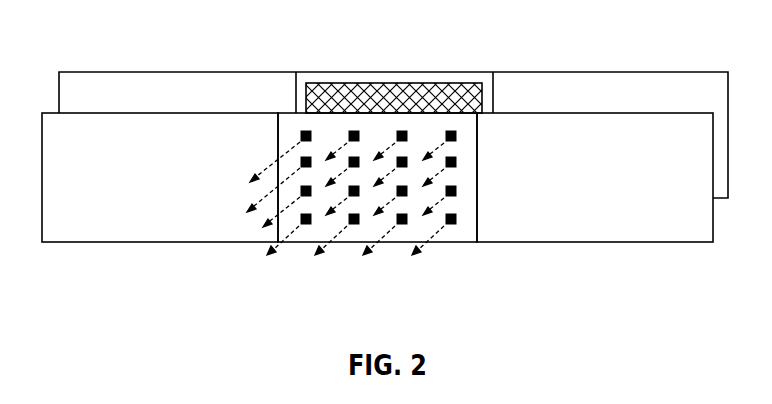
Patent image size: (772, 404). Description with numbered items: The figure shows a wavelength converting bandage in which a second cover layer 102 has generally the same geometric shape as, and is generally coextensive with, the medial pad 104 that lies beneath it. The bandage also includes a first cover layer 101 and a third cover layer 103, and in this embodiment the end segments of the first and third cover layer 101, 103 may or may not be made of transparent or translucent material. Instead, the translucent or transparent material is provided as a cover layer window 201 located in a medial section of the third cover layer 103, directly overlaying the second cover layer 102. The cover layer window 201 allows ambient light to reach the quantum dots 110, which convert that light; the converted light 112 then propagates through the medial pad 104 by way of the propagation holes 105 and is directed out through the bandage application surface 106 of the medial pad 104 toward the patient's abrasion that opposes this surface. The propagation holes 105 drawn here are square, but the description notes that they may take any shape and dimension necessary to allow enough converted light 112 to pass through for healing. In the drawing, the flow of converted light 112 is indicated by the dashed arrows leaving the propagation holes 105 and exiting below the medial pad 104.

The first cover layer 101 is at (581, 232).
The second cover layer 102 is at (340, 87).
The third cover layer 103 is at (650, 88).
The medial pad 104 is at (475, 180).
The propagation holes 105 is at (457, 226).
The bandage application surface 106 is at (145, 223).
The quantum dots 110 is at (388, 87).
The converted light 112 is at (373, 252).
The cover layer window 201 is at (300, 78).